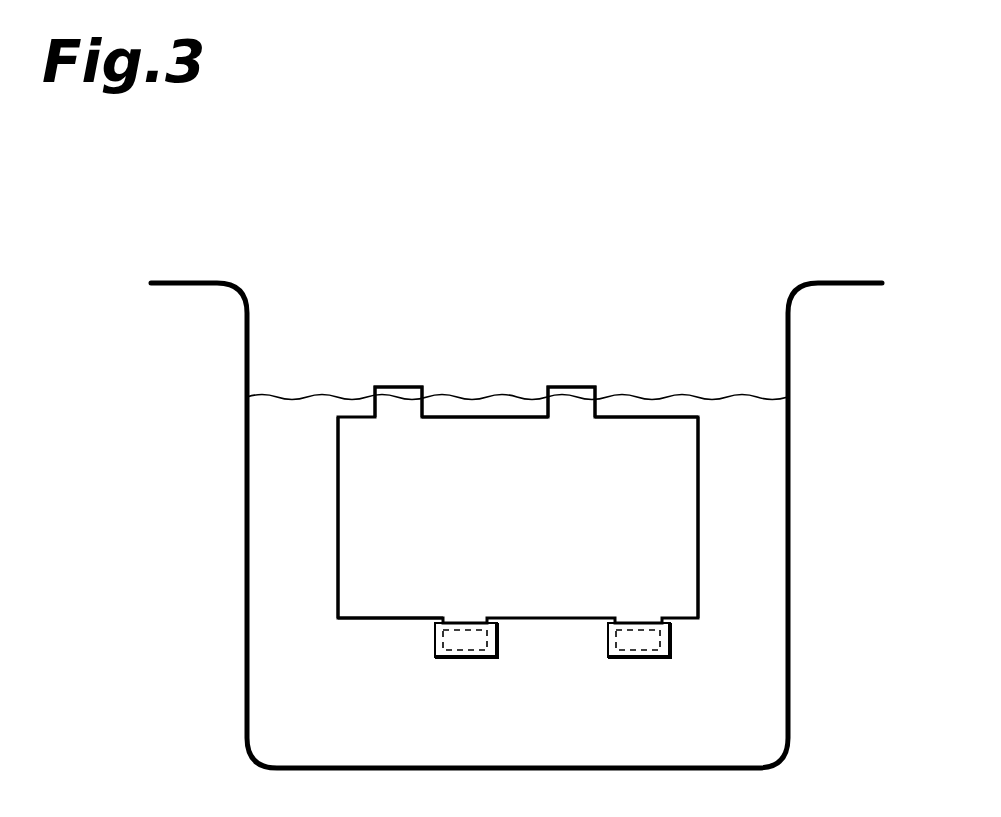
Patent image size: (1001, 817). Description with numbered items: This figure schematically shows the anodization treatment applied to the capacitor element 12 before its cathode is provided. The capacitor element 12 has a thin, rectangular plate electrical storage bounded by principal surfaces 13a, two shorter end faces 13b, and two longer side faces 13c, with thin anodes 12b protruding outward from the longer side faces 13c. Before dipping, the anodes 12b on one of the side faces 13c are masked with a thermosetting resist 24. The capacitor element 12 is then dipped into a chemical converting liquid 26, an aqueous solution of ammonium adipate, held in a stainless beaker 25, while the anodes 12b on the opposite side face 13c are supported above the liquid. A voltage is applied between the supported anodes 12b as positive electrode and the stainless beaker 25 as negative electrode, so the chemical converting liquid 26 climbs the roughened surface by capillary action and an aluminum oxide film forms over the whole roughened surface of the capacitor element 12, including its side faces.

The capacitor element 12 is at (706, 514).
The anodes 12b is at (405, 392).
The principal surface 13a is at (490, 452).
The end faces 13b is at (337, 572).
The longer side faces 13c is at (645, 415).
The thermosetting resist 24 is at (447, 659).
The stainless beaker 25 is at (790, 646).
The chemical converting liquid 26 is at (313, 395).